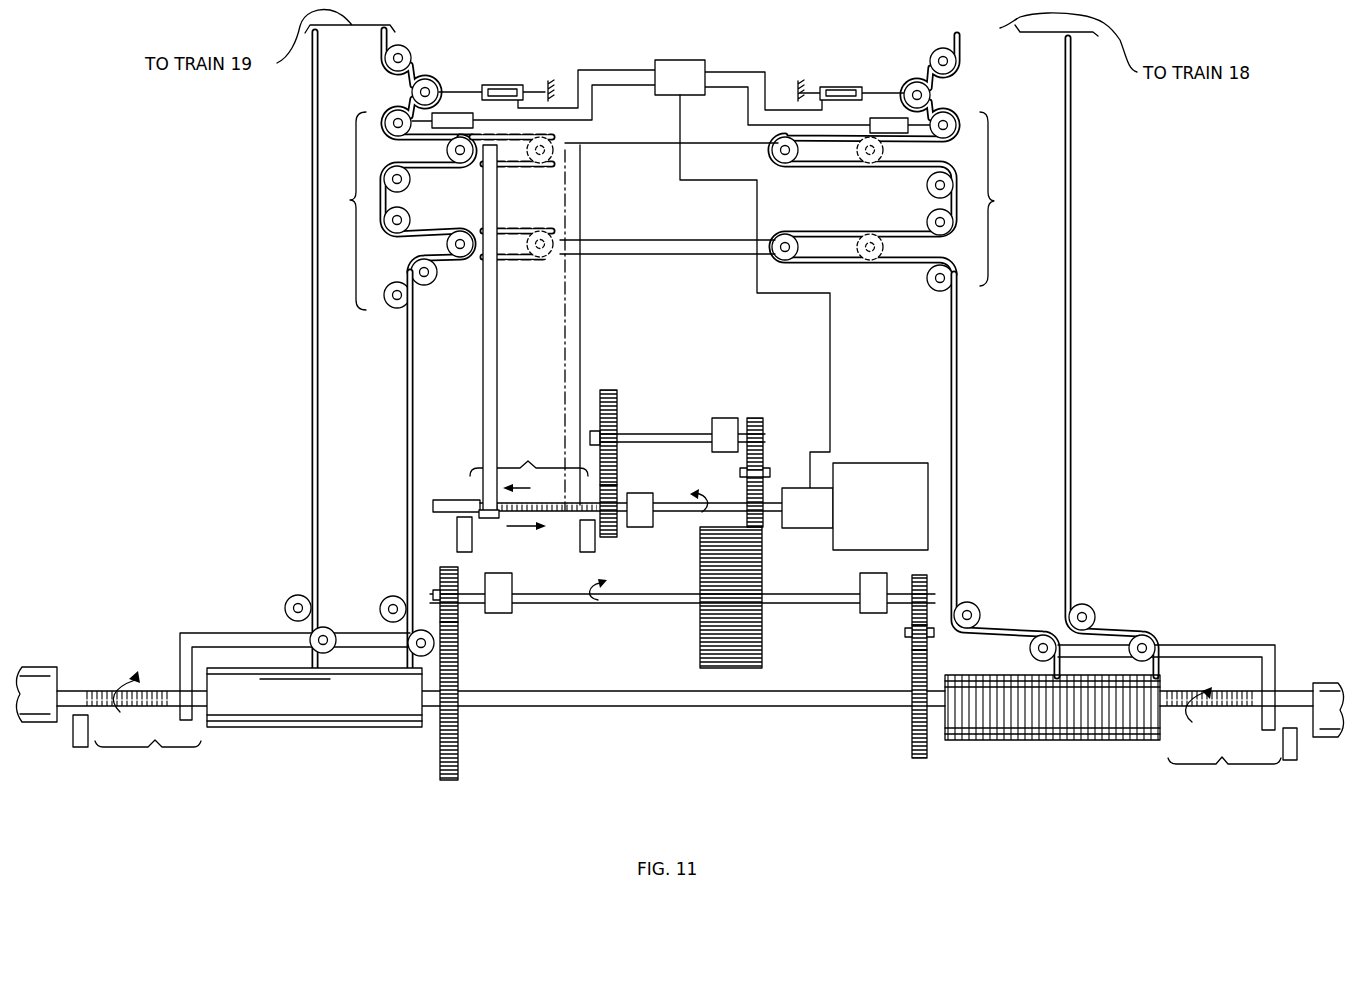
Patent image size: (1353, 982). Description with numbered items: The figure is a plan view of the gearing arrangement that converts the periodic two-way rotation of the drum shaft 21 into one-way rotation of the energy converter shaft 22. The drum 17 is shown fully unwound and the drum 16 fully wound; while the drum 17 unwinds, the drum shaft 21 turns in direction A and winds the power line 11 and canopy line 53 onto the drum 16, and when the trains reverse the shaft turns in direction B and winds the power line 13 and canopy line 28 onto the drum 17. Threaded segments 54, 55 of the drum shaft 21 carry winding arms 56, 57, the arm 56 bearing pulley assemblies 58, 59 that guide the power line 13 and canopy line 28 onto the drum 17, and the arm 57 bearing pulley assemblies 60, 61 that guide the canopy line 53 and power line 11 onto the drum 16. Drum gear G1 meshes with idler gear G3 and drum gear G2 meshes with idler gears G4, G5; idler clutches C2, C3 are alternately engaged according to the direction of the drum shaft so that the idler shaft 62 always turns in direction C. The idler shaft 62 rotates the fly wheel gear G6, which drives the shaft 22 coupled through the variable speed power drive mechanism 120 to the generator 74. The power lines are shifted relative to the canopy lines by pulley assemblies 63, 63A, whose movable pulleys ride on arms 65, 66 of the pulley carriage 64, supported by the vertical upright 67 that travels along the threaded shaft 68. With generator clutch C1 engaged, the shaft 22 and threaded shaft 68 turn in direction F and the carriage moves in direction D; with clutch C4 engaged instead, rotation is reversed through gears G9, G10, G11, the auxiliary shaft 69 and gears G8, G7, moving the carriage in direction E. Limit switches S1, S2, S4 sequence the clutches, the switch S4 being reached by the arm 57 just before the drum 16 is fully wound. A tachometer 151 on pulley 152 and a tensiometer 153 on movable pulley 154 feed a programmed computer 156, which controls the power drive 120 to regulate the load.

The power line 11 is at (957, 508).
The power line 13 is at (407, 432).
The drum 16 is at (1098, 741).
The drum 17 is at (342, 727).
The drum shaft 21 is at (630, 706).
The energy converter shaft 22 is at (668, 503).
The canopy line 28 is at (392, 105).
The canopy line 53 is at (1071, 409).
The threaded segment of drum shaft 54 is at (143, 732).
The threaded segment of drum shaft 55 is at (1223, 737).
The winding arm 56 is at (185, 632).
The winding arm 57 is at (1222, 645).
The pulley assembly 58 is at (288, 620).
The pulley assembly 59 is at (384, 620).
The pulley assembly 60 is at (1043, 634).
The pulley assembly 61 is at (1142, 634).
The idler shaft 62 is at (647, 604).
The pulley assembly 63 is at (437, 211).
The pulley assembly 63A is at (901, 163).
The pulley carriage 64 is at (705, 256).
The arm 65 is at (585, 143).
The arm 66 is at (692, 240).
The vertical upright 67 is at (493, 380).
The threaded shaft 68 is at (529, 327).
The auxiliary shaft 69 is at (660, 433).
The generator 74 is at (880, 478).
The variable speed power drive mechanism 120 is at (808, 528).
The tachometer 151 is at (455, 113).
The pulley 152 is at (383, 133).
The tensiometer 153 is at (517, 85).
The movable pulley 154 is at (429, 80).
The programmed computer 156 is at (696, 60).
The drum gear G1 is at (460, 772).
The drum gear G2 is at (913, 745).
The idler gear G3 is at (440, 578).
The idler gear G4 is at (932, 640).
The idler gear G5 is at (930, 583).
The fly wheel gear G6 is at (762, 654).
The generator gear G7 is at (620, 537).
The generator gear G8 is at (616, 392).
The generator gear G9 is at (765, 530).
The generator gear G10 is at (770, 467).
The generator gear G11 is at (762, 424).
The generator clutch C1 is at (640, 493).
The idler clutch C2 is at (500, 613).
The idler clutch C3 is at (872, 613).
The generator clutch C4 is at (728, 418).
The limit switch S1 is at (457, 530).
The limit switch S2 is at (583, 540).
The limit switch S4 is at (1290, 760).
The direction of rotation A is at (126, 684).
The direction of rotation B is at (1205, 699).
The direction of rotation C is at (606, 581).
The direction of travel D is at (521, 529).
The direction of travel E is at (523, 491).
The direction of rotation F is at (694, 495).